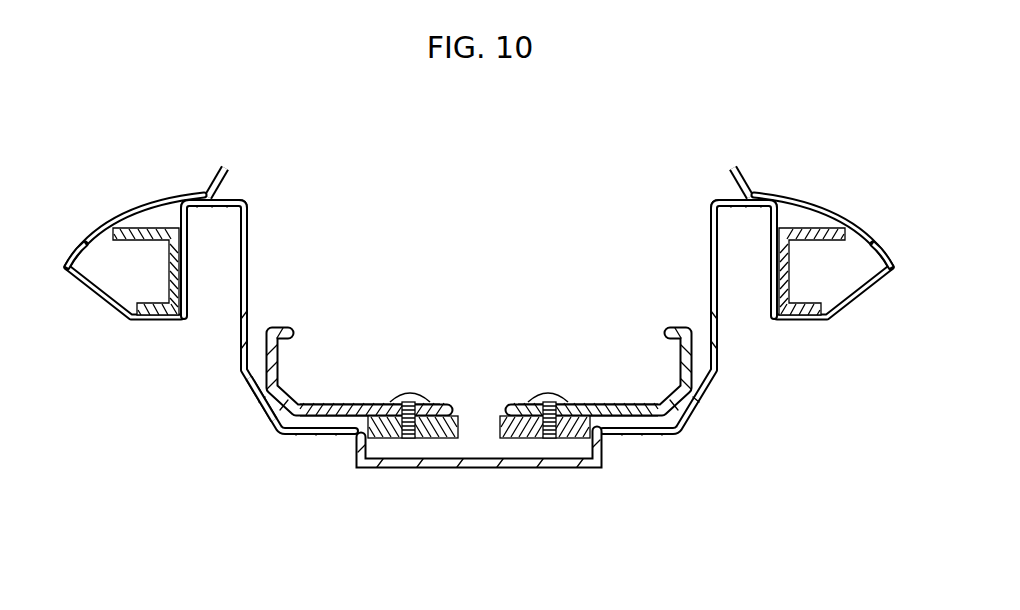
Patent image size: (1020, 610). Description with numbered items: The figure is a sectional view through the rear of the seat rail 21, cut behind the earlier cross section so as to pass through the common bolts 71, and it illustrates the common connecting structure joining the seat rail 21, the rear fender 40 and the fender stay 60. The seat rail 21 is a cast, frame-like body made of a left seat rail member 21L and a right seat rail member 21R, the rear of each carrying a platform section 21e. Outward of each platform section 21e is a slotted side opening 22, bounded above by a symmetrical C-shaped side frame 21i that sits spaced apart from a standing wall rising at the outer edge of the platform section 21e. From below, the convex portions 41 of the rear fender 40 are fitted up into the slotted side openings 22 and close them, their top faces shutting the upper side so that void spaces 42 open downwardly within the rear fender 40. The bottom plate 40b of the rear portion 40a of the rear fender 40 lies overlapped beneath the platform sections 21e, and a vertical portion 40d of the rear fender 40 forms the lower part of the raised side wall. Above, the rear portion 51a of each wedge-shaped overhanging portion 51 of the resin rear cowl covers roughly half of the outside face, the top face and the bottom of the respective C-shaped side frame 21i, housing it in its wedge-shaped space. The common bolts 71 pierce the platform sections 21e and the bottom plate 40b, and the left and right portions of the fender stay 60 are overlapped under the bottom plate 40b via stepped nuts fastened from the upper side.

The seat rail 21 is at (482, 318).
The left seat rail member 21L is at (268, 418).
The right seat rail member 21R is at (697, 393).
The platform section 21e is at (350, 402).
The C-shaped side frame 21i is at (138, 229).
The slotted side opening 22 is at (191, 266).
The rear fender 40 is at (457, 346).
The rear portion of the rear fender 40a is at (658, 451).
The bottom plate 40b is at (314, 439).
The vertical portion 40d is at (243, 370).
The convex portion 41 is at (203, 188).
The void space 42 is at (229, 213).
The overhanging portion 51 is at (483, 278).
The rear portion of the overhanging portion 51a is at (65, 268).
The fender stay 60 is at (603, 448).
The common bolt 71 is at (413, 394).